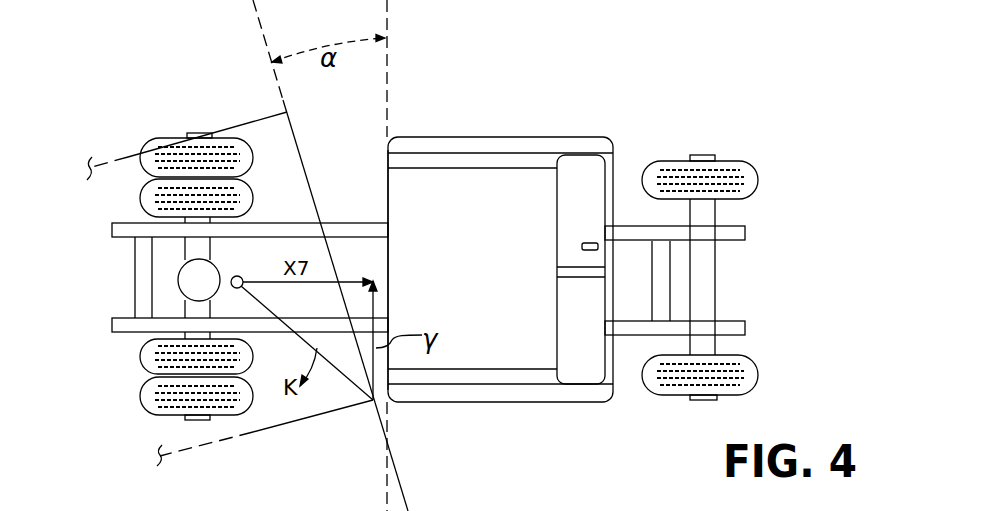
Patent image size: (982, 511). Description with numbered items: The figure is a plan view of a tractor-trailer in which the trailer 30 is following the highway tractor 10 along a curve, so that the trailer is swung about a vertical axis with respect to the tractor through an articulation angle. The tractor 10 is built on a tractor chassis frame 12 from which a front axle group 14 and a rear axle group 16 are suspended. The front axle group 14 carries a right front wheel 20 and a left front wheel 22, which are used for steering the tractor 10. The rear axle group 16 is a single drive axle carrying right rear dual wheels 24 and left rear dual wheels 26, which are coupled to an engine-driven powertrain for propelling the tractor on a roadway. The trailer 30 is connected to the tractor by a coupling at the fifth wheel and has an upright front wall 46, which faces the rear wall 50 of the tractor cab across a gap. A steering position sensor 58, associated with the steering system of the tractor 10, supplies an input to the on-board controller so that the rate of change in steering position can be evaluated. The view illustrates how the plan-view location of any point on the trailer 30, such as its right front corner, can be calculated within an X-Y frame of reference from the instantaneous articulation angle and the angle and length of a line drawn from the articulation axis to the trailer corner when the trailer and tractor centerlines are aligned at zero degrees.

The highway tractor 10 is at (535, 128).
The tractor chassis frame 12 is at (746, 232).
The front axle group 14 is at (726, 283).
The rear axle group 16 is at (137, 426).
The right front wheel 20 is at (672, 397).
The left front wheel 22 is at (748, 160).
The right rear dual wheels 24 is at (139, 396).
The left rear dual wheels 26 is at (139, 163).
The trailer 30 is at (233, 112).
The front wall 46 is at (297, 143).
The rear wall 50 is at (387, 178).
The steering position sensor 58 is at (591, 243).